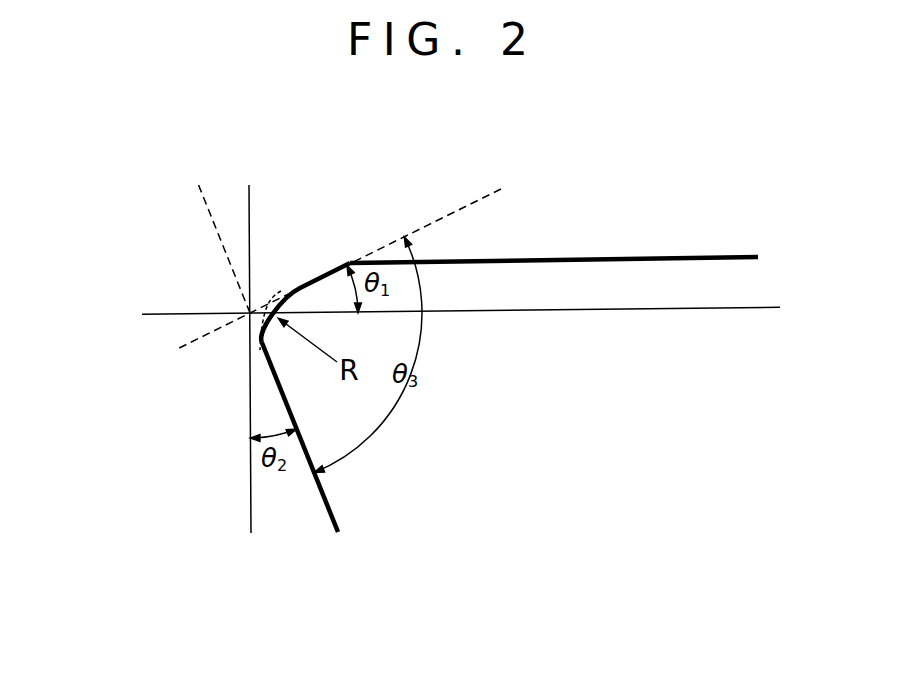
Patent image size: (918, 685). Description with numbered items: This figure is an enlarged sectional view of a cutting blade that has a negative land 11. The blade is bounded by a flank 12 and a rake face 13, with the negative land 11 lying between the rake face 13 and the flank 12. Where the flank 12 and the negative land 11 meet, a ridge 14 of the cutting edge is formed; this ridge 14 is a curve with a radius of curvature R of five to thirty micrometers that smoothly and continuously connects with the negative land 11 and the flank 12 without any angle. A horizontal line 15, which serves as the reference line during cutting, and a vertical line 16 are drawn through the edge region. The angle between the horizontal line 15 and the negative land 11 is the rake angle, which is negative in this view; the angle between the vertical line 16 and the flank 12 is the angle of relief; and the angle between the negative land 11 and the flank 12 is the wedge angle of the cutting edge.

The negative land 11 is at (313, 270).
The flank 12 is at (327, 507).
The rake face 13 is at (550, 257).
The ridge of the cutting edge 14 is at (251, 321).
The horizontal line 15 is at (623, 307).
The vertical line 16 is at (249, 230).